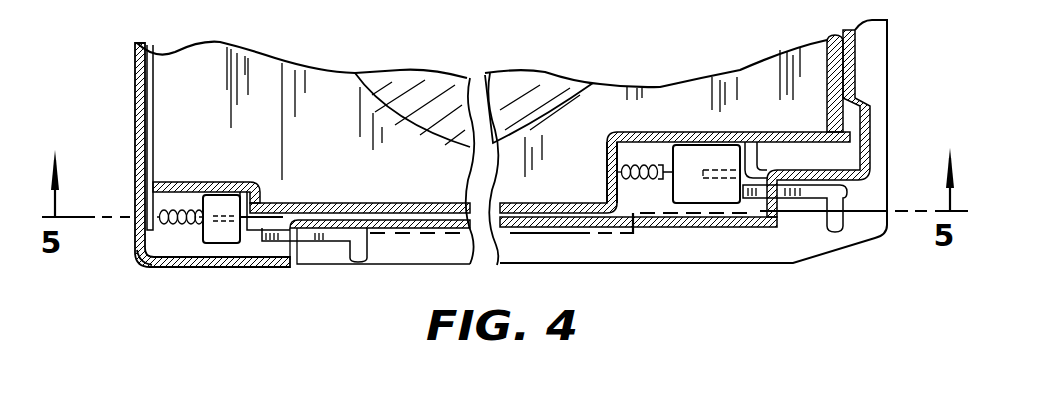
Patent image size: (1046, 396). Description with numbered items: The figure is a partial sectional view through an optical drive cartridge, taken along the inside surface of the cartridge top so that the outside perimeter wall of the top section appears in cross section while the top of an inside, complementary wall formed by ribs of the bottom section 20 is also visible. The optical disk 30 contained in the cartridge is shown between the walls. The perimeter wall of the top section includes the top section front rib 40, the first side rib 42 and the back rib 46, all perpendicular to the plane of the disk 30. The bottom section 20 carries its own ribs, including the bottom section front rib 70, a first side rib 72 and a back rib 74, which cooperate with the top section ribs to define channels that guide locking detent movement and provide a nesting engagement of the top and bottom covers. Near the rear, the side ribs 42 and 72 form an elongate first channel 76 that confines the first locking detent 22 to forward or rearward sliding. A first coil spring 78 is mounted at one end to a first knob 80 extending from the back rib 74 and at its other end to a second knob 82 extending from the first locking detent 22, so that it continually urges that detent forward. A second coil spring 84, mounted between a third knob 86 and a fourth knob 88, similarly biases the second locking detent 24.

The bottom section 20 is at (755, 78).
The first locking detent 22 is at (225, 238).
The second locking detent 24 is at (700, 160).
The optical disk 30 is at (413, 92).
The top section front rib 40 is at (868, 100).
The first side rib 42 is at (715, 228).
The back rib 46 is at (135, 52).
The bottom section front rib 70 is at (827, 62).
The first side rib 72 is at (560, 207).
The back rib 74 is at (157, 88).
The first channel 76 is at (182, 200).
The first coil spring 78 is at (175, 227).
The first knob 80 is at (143, 258).
The second knob 82 is at (203, 185).
The second coil spring 84 is at (638, 163).
The third knob 86 is at (617, 170).
The fourth knob 88 is at (667, 163).